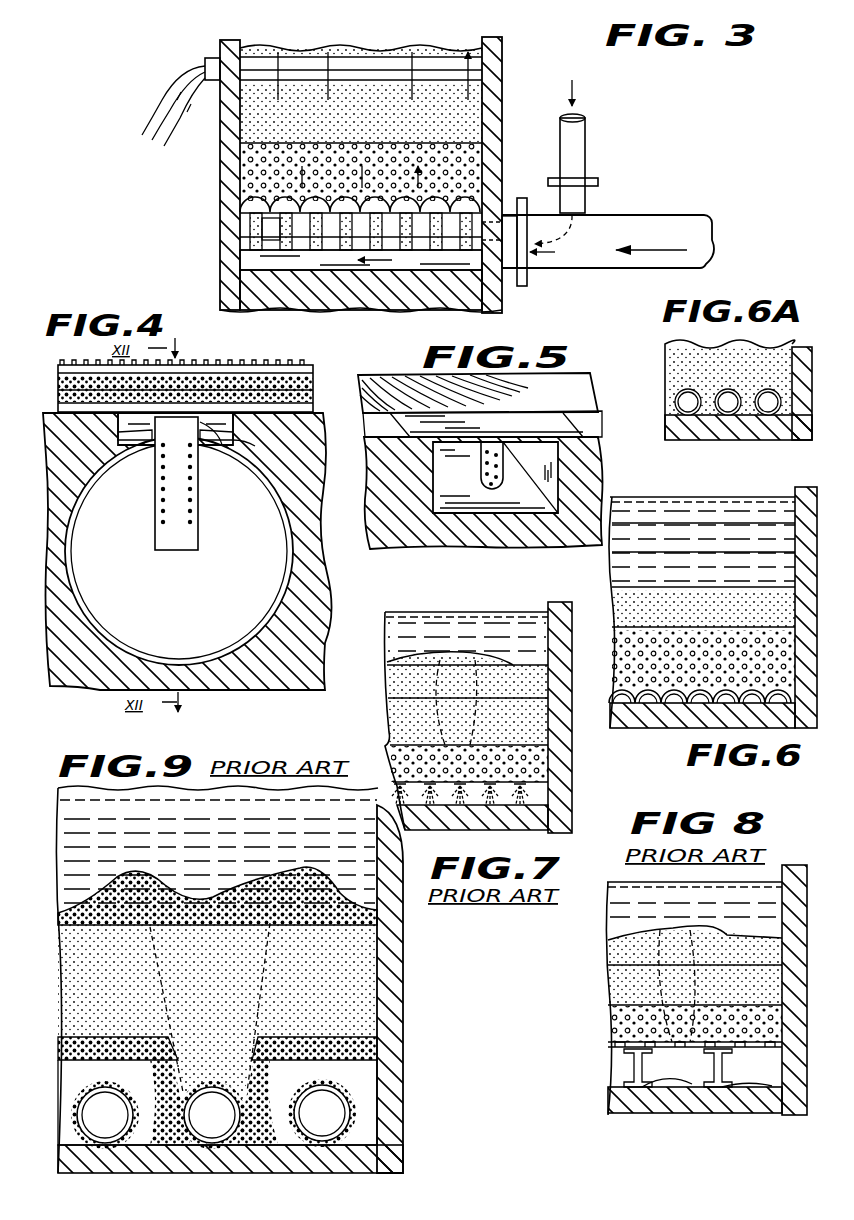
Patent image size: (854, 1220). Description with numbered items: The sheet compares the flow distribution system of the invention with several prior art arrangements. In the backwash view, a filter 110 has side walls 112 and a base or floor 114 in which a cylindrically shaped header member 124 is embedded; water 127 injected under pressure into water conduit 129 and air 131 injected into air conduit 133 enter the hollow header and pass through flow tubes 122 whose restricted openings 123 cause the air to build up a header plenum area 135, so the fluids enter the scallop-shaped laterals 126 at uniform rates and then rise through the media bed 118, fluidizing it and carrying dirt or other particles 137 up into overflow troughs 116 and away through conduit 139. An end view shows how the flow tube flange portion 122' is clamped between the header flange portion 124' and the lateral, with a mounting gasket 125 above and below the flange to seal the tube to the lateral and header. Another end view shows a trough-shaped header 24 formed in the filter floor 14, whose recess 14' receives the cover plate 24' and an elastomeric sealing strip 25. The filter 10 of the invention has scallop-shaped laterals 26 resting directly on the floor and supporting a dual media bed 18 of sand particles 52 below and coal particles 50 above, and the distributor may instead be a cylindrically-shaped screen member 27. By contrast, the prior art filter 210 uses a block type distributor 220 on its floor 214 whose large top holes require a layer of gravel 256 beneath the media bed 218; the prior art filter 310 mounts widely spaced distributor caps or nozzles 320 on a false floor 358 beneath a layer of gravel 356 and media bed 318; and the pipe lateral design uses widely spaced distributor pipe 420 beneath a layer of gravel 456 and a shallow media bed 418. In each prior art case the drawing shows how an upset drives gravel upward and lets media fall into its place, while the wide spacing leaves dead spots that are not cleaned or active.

In FIG. 3, the filter 110 is at (502, 42).
In FIG. 3, the side walls 112 is at (502, 106).
In FIG. 3, the base or floor 114 is at (252, 284).
In FIG. 3, the overflow troughs 116 is at (346, 46).
In FIG. 3, the media bed 118 is at (252, 130).
In FIG. 3, the flow tubes 122 is at (329, 227).
In FIG. 4, the flow tubes 122 is at (145, 493).
In FIG. 3, the openings 123 is at (250, 238).
In FIG. 3, the cylindrically shaped header member 124 is at (329, 263).
In FIG. 4, the cylindrically shaped header member 124 is at (187, 551).
In FIG. 4, the mounting gasket 125 is at (247, 420).
In FIG. 3, the scallop-shaped laterals 126 is at (448, 200).
In FIG. 4, the scallop-shaped laterals 126 is at (312, 362).
In FIG. 3, the water 127 is at (645, 252).
In FIG. 3, the water conduit 129 is at (635, 215).
In FIG. 3, the air 131 is at (578, 88).
In FIG. 3, the air conduit 133 is at (586, 135).
In FIG. 3, the header plenum area 135 is at (452, 228).
In FIG. 3, the dirt or other particles 137 is at (402, 105).
In FIG. 3, the conduit 139 is at (206, 57).
In FIG. 4, the flange portion 122' is at (127, 480).
In FIG. 4, the header flange portion 124' is at (231, 483).
In FIG. 5, the filter floor 14 is at (478, 383).
In FIG. 6, the filter floor 14 is at (699, 730).
In FIG. 5, the recess 14' is at (494, 413).
In FIG. 5, the trough-shaped header 24 is at (492, 475).
In FIG. 5, the cover plate 24' is at (486, 425).
In FIG. 5, the elastomeric sealing strip 25 is at (560, 452).
In FIG. 6A, the media bed 18 is at (713, 365).
In FIG. 6, the media bed 18 is at (612, 657).
In FIG. 6A, the cylindrically-shaped screen member 27 is at (733, 388).
In FIG. 6, the filter 10 is at (803, 488).
In FIG. 6, the scallop-shaped laterals 26 is at (672, 687).
In FIG. 6, the coal particles 50 is at (703, 653).
In FIG. 6, the sand particles 52 is at (636, 607).
In FIG. 7, the filter 210 is at (453, 610).
In FIG. 7, the floor 214 is at (548, 803).
In FIG. 7, the media bed 218 is at (386, 711).
In FIG. 7, the block type distributor 220 is at (548, 786).
In FIG. 7, the layer of gravel 256 is at (388, 756).
In FIG. 8, the filter 310 is at (608, 917).
In FIG. 8, the media bed 318 is at (608, 986).
In FIG. 8, the distributor caps or nozzles 320 is at (624, 1046).
In FIG. 8, the layer of gravel 356 is at (608, 1028).
In FIG. 8, the false floor 358 is at (664, 1052).
In FIG. 9, the media bed 418 is at (387, 985).
In FIG. 9, the distributor pipe 420 is at (347, 1093).
In FIG. 9, the layer of gravel 456 is at (273, 1074).